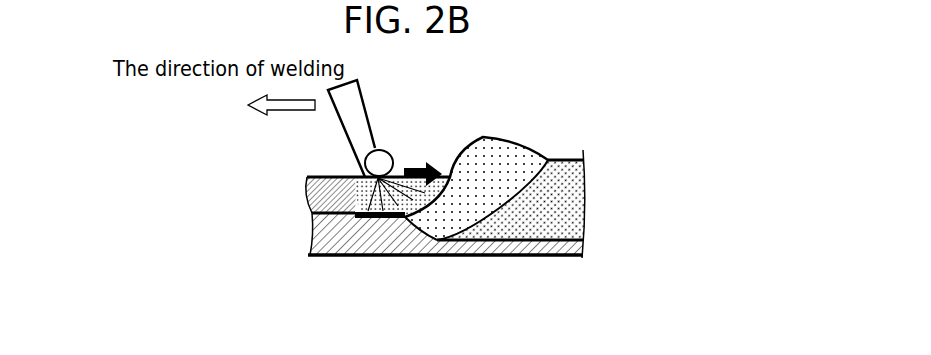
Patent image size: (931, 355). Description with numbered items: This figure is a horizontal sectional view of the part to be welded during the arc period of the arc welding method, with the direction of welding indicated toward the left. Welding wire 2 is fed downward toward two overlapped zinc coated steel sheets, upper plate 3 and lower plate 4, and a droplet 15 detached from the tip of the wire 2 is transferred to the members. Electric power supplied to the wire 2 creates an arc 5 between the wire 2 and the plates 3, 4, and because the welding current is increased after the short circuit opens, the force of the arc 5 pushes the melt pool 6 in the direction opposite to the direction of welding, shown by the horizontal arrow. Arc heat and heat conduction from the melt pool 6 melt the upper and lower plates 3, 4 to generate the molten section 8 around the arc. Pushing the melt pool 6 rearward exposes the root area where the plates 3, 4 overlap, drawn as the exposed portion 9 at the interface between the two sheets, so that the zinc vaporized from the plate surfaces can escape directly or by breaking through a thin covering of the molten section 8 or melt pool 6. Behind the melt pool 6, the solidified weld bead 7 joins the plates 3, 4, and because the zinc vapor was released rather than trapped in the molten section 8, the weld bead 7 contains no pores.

The welding wire 2 is at (366, 113).
The upper plate 3 is at (326, 195).
The lower plate 4 is at (327, 237).
The arc 5 is at (442, 165).
The melt pool 6 is at (510, 152).
The weld bead 7 is at (562, 177).
The molten section 8 is at (354, 176).
The exposed portion 9 is at (367, 220).
The droplet 15 is at (385, 151).